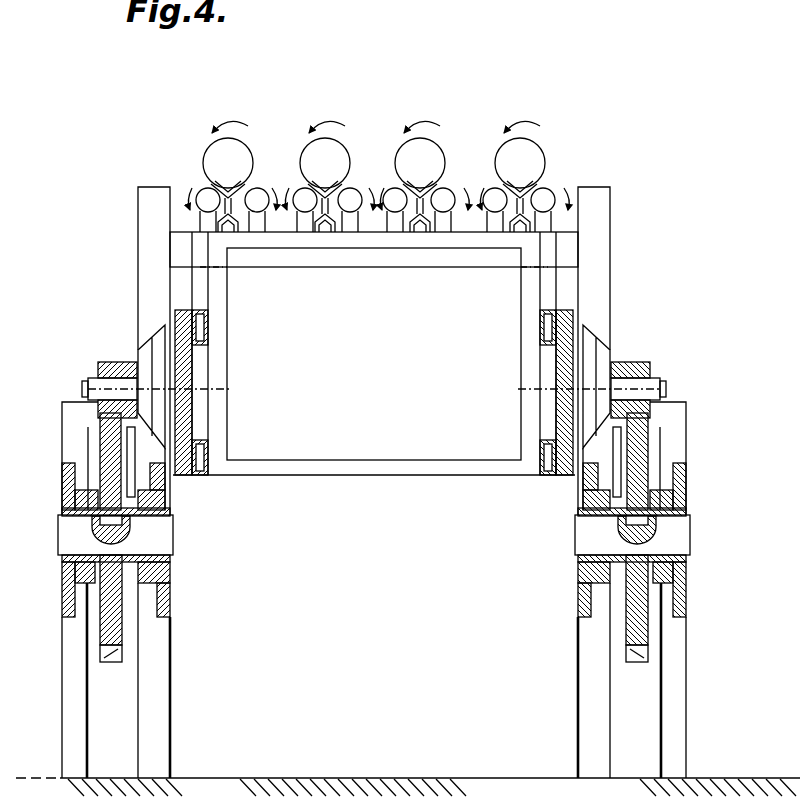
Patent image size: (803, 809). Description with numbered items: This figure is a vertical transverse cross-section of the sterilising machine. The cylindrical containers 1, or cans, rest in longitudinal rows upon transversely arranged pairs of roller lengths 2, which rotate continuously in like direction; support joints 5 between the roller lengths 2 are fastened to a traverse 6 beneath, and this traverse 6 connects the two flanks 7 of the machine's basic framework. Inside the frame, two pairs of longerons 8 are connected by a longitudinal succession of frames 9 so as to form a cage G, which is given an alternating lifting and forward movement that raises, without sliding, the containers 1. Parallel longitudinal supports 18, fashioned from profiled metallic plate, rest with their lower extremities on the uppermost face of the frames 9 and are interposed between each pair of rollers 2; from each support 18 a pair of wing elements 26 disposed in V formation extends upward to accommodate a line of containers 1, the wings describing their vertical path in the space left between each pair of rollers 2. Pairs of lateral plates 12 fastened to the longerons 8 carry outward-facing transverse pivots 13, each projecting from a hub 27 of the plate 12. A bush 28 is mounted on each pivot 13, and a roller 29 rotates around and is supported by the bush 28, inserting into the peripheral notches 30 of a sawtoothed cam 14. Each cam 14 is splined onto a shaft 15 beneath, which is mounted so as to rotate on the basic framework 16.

The cylindrical containers 1 is at (232, 165).
The roller lengths 2 is at (258, 198).
The support joints 5 is at (300, 233).
The traverse 6 is at (180, 248).
The flanks 7 is at (172, 283).
The longerons 8 is at (200, 478).
The frames 9 is at (380, 470).
The lateral plates 12 is at (187, 426).
The transverse pivots 13 is at (112, 362).
The sawtoothed cam 14 is at (110, 443).
The shaft 15 is at (158, 542).
The basic framework 16 is at (157, 738).
The longitudinal supports 18 is at (327, 242).
The wing elements 26 is at (215, 192).
The hub 27 is at (150, 345).
The bush 28 is at (122, 388).
The roller 29 is at (90, 413).
The peripheral notches 30 is at (110, 656).
The cage G is at (566, 228).